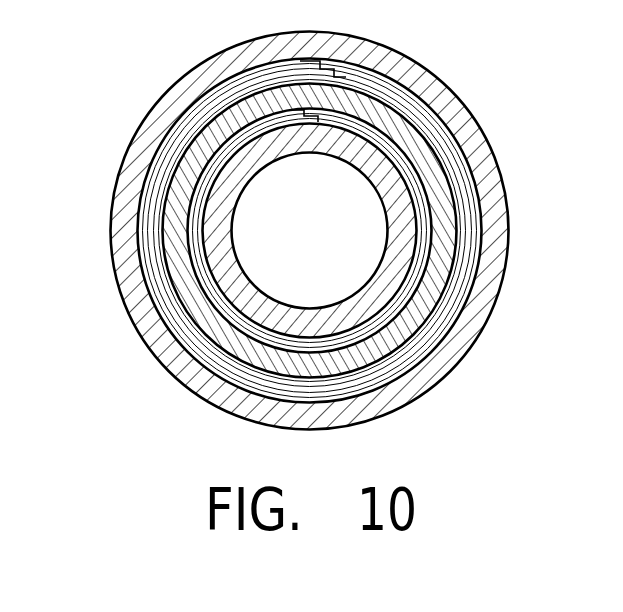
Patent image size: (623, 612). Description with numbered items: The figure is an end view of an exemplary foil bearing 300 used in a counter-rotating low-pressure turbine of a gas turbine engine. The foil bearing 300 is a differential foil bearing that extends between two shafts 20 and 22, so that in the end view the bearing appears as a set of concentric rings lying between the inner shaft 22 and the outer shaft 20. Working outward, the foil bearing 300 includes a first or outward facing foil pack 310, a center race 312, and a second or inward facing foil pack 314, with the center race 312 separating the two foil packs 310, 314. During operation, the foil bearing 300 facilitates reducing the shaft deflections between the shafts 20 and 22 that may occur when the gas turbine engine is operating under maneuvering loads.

The foil bearing 300 is at (327, 227).
The shaft 20 is at (478, 300).
The shaft 22 is at (242, 165).
The first foil pack 310 is at (193, 240).
The center race 312 is at (227, 342).
The second foil pack 314 is at (170, 310).